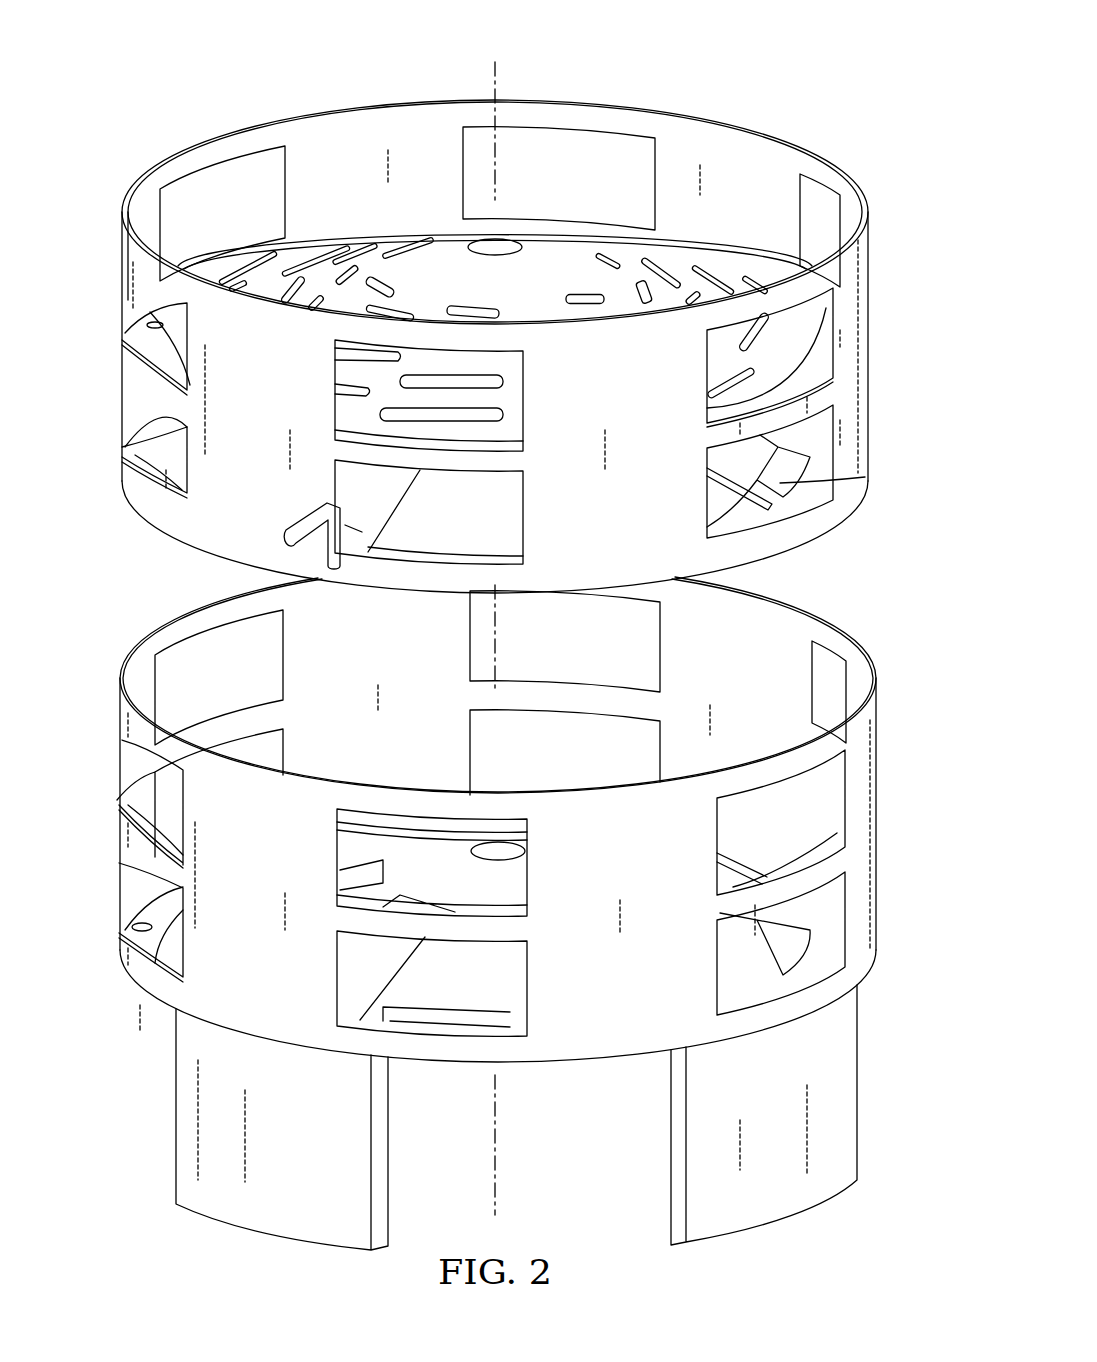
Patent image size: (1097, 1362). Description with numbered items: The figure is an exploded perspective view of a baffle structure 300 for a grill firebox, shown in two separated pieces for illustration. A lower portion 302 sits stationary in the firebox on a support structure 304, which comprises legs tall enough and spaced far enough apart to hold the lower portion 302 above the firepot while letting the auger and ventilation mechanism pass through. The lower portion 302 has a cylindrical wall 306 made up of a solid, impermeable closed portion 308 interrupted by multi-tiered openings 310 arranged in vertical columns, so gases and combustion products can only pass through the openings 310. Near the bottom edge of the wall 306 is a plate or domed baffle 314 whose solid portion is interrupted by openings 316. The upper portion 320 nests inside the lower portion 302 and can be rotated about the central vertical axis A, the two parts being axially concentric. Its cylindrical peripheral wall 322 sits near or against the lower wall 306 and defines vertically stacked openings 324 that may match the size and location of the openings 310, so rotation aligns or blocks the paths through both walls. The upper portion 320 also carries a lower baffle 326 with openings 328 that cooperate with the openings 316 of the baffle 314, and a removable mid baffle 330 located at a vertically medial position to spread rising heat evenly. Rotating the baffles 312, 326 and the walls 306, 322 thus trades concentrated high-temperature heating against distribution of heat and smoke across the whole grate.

The baffle structure 300 is at (714, 60).
The upper portion 320 is at (340, 96).
The cylindrical peripheral wall 322 is at (871, 302).
The openings 324 is at (834, 492).
The lower baffle 326 is at (355, 488).
The openings 328 is at (498, 510).
The mid baffle 330 is at (554, 250).
The lower portion 302 is at (878, 900).
The support structure 304 is at (860, 1082).
The cylindrical wall 306 is at (877, 742).
The closed portion 308 is at (606, 1048).
The openings 310 is at (345, 963).
The baffle 312 is at (142, 895).
The domed baffle 314 is at (502, 958).
The openings 316 is at (748, 952).